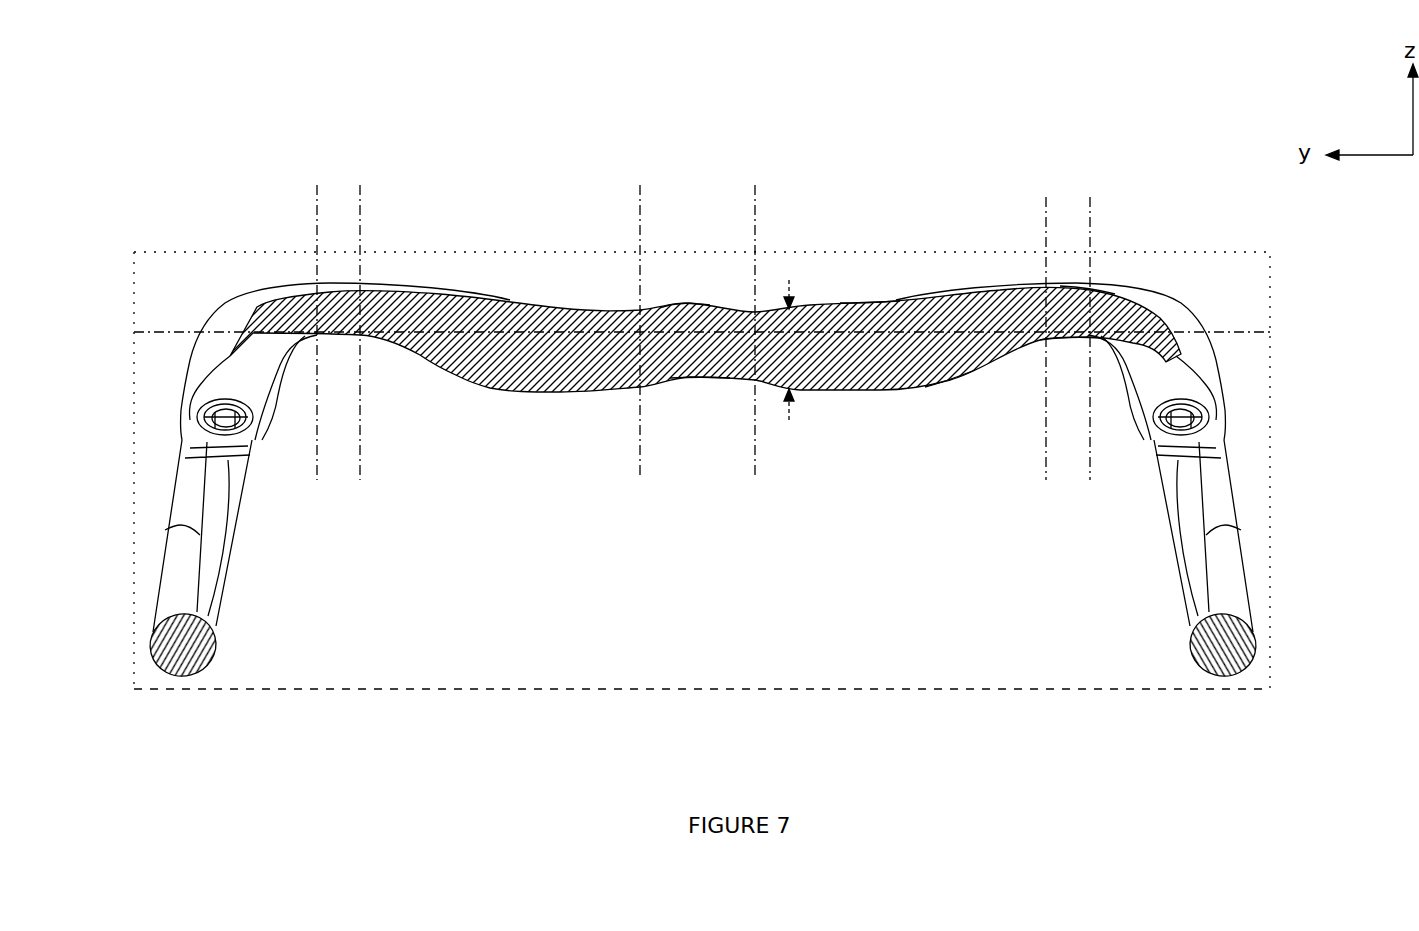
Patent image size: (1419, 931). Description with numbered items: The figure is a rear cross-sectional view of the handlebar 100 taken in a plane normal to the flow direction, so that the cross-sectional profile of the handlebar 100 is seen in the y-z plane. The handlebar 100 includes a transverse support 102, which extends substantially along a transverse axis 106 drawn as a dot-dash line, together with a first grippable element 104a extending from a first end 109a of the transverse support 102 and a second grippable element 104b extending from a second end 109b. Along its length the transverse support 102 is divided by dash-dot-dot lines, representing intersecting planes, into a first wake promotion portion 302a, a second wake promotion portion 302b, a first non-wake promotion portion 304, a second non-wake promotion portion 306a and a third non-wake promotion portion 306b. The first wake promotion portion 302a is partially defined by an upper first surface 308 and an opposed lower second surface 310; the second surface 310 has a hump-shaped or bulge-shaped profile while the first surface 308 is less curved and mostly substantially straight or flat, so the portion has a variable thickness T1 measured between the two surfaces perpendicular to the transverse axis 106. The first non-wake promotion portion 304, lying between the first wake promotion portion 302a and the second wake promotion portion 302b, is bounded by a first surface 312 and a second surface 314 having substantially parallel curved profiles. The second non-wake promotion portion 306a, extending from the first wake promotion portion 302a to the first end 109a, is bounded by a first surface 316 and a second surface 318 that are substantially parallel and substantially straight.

The handlebar 100 is at (852, 146).
The transverse support 102 is at (692, 474).
The first grippable element 104a is at (1210, 517).
The second grippable element 104b is at (190, 506).
The transverse axis 106 is at (1257, 332).
The first end of the transverse support 109a is at (1136, 312).
The second end of the transverse support 109b is at (292, 307).
The first wake promotion portion 302a is at (974, 338).
The second wake promotion portion 302b is at (550, 331).
The first non-wake promotion portion 304 is at (720, 331).
The second non-wake promotion portion 306a is at (1077, 213).
The third non-wake promotion portion 306b is at (336, 205).
The first surface of the first wake promotion portion 308 is at (864, 310).
The second surface of the first wake promotion portion 310 is at (952, 385).
The first surface of the first non-wake promotion portion 312 is at (683, 306).
The second surface of the first non-wake promotion portion 314 is at (697, 378).
The first surface of the second non-wake promotion portion 316 is at (1087, 296).
The second surface of the second non-wake promotion portion 318 is at (1067, 333).
The variable thickness T1 is at (791, 336).